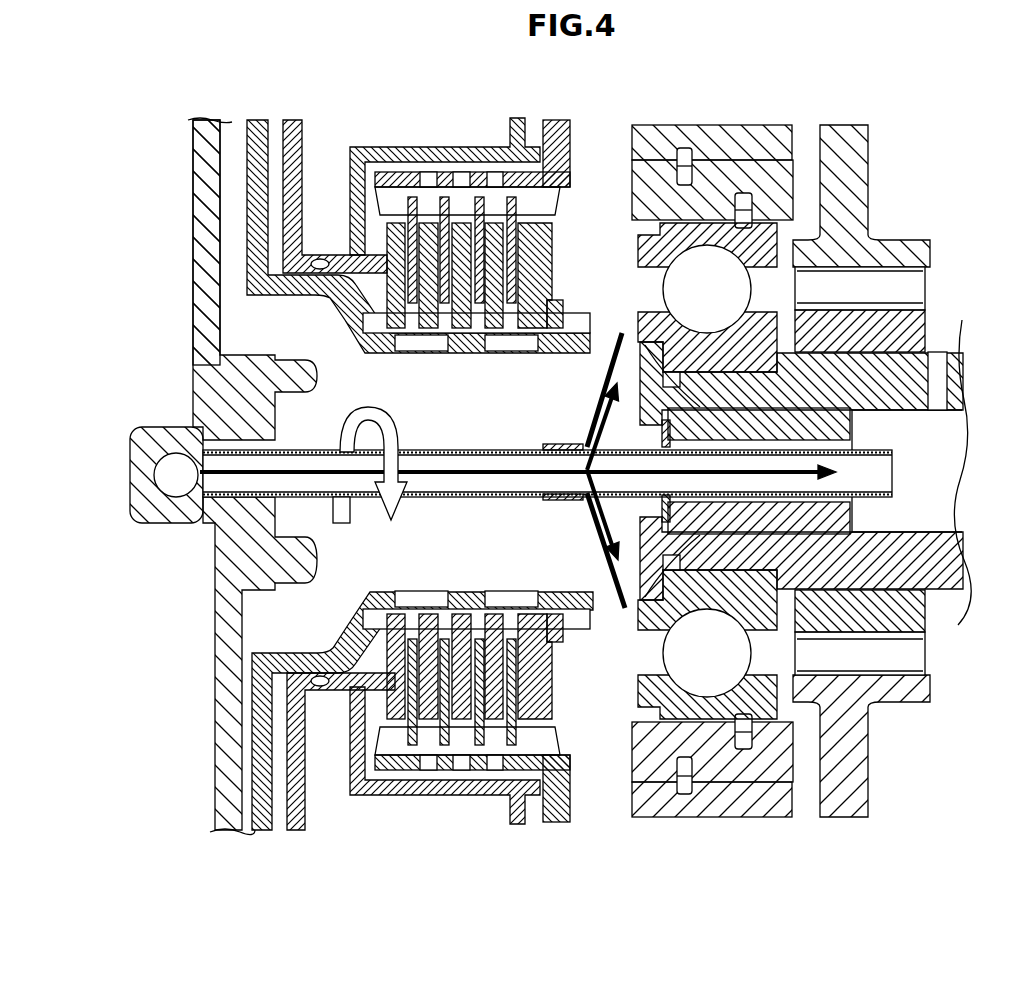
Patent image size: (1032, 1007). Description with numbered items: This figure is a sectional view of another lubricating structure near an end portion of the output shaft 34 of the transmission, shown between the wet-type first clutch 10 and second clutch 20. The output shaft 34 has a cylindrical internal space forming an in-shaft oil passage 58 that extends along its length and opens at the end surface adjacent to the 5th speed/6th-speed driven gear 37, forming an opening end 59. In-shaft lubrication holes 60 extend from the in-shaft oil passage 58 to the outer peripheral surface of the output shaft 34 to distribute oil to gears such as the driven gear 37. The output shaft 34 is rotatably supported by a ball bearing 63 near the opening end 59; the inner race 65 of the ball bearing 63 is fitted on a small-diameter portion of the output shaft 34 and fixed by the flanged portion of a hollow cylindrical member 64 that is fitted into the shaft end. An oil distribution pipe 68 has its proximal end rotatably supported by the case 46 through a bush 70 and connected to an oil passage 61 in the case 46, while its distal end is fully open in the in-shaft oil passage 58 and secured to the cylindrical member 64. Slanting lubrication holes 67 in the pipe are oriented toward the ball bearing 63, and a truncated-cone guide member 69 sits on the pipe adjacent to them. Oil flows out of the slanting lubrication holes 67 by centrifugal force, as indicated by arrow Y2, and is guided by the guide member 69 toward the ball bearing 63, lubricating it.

The case 46 is at (200, 165).
The first clutch 10 is at (247, 233).
The second clutch 20 is at (252, 700).
The oil distribution pipe 68 is at (335, 450).
The bush 70 is at (240, 510).
The oil passage 61 is at (165, 478).
The in-shaft oil passage 58 is at (947, 449).
The opening end 59 is at (640, 365).
The slanting lubrication holes 67 is at (580, 493).
The guide member 69 is at (605, 553).
The arrow Y2 is at (602, 395).
The ball bearing 63 is at (762, 290).
The inner race 65 is at (838, 410).
The cylindrical member 64 is at (940, 345).
The in-shaft lubrication holes 60 is at (937, 375).
The output shaft 34 is at (955, 555).
The 5th speed/6th-speed driven gear 37 is at (915, 612).